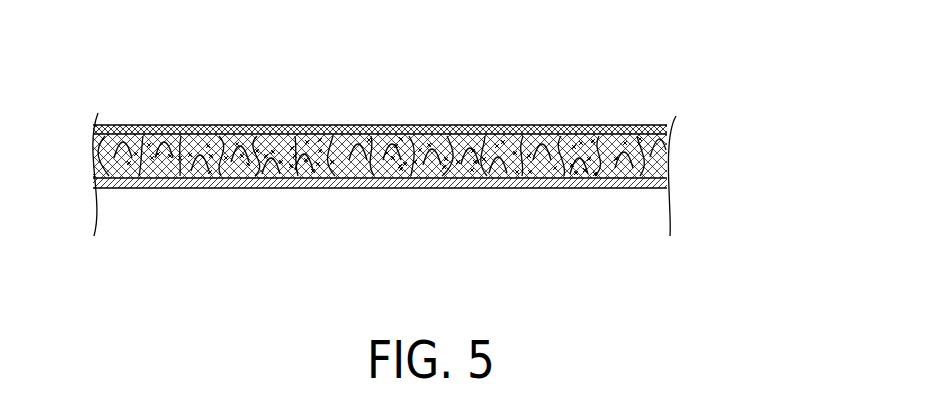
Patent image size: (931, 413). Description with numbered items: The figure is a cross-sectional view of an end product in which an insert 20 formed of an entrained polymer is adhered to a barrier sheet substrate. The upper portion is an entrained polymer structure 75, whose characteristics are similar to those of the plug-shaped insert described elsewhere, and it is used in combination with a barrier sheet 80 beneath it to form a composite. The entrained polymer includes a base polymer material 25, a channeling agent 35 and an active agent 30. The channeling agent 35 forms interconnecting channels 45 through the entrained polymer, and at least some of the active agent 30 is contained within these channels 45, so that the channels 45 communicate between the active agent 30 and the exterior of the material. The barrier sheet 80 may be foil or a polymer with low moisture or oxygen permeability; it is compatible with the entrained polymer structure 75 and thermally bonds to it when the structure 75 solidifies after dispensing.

The insert 20 is at (665, 115).
The base polymer material 25 is at (122, 130).
The active agent 30 is at (235, 130).
The channeling agent 35 is at (333, 130).
The interconnecting channels 45 is at (175, 130).
The entrained polymer structure 75 is at (697, 143).
The barrier sheet 80 is at (697, 201).